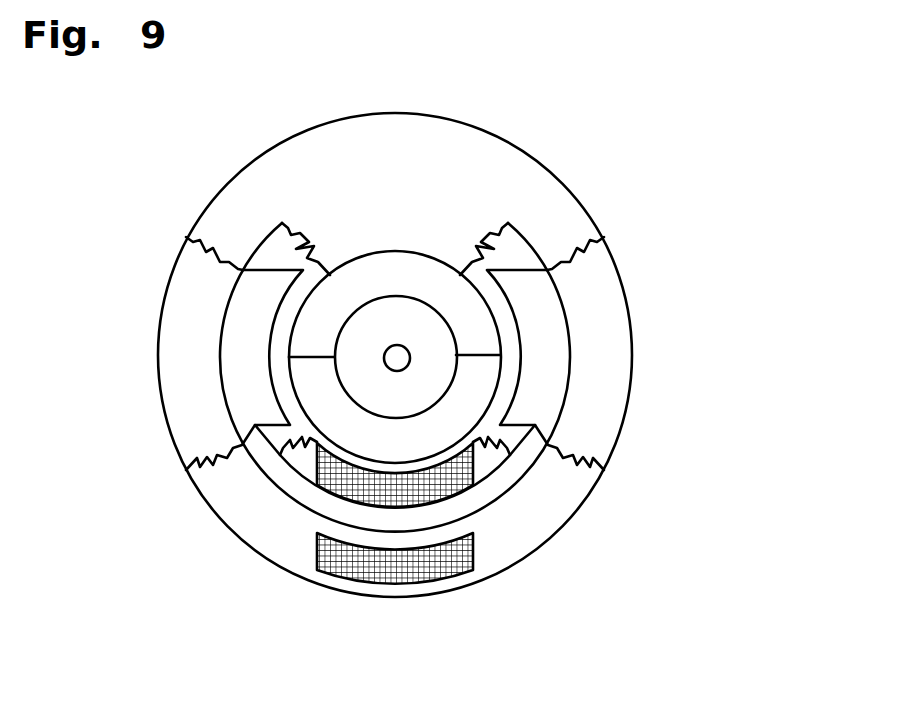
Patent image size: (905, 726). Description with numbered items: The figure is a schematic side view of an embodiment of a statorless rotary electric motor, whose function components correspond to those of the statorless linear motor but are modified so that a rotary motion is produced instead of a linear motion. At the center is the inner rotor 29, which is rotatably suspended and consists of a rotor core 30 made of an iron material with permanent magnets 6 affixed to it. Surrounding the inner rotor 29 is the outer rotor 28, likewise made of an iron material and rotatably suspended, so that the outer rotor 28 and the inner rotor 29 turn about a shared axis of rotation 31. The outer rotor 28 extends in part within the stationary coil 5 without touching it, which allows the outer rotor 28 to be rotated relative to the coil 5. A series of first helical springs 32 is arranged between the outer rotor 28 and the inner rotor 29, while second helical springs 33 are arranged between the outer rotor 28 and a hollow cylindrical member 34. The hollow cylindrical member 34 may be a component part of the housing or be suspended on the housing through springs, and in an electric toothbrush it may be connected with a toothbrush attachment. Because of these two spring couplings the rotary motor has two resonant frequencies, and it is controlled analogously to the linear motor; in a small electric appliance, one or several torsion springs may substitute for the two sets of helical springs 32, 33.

The coil 5 is at (470, 474).
The permanent magnets 6 is at (413, 250).
The outer rotor 28 is at (558, 421).
The inner rotor 29 is at (451, 254).
The rotor core 30 is at (447, 350).
The axis of rotation 31 is at (405, 364).
The first helical springs 32 is at (305, 235).
The second helical springs 33 is at (214, 247).
The hollow cylindrical member 34 is at (617, 330).